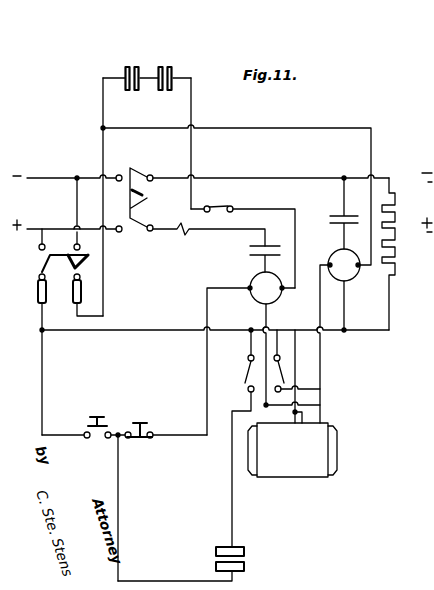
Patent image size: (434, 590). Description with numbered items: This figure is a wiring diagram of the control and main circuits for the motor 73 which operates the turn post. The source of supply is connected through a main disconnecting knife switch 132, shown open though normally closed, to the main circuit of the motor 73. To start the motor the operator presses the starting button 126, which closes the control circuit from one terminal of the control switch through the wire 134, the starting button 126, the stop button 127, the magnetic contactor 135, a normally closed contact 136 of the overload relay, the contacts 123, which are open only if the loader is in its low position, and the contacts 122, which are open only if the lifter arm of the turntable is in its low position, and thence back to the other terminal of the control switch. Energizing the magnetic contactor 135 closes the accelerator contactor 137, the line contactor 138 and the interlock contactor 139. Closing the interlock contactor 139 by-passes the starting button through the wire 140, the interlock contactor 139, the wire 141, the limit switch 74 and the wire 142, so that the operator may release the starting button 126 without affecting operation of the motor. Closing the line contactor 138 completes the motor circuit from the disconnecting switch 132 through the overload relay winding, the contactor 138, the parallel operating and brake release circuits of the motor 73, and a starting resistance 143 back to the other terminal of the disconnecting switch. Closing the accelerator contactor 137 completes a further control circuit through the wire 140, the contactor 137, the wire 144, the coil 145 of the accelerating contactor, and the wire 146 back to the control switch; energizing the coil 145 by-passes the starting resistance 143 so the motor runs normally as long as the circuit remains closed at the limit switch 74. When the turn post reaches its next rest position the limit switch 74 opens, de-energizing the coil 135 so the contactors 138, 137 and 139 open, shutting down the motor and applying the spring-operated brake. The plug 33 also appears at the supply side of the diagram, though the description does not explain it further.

The cooperating contacts 122 is at (138, 66).
The cooperating contacts 123 is at (174, 70).
The wire 146 is at (297, 128).
The main disconnecting knife switch 132 is at (149, 206).
The normally closed contact of the overload relay 136 is at (222, 207).
The starting resistance 143 is at (397, 212).
The plug 33 is at (47, 263).
The line contactor 138 is at (250, 251).
The magnetic contactor 135 is at (257, 297).
The wire 144 is at (318, 290).
The coil of the accelerating contactor 145 is at (353, 280).
The wire 140 is at (144, 331).
The wire 134 is at (42, 378).
The interlock contactor 139 is at (246, 375).
The accelerator contactor 137 is at (284, 377).
The starting button 126 is at (92, 422).
The stop button 127 is at (146, 425).
The wire 142 is at (118, 516).
The wire 141 is at (232, 511).
The motor 73 is at (289, 466).
The limit switch 74 is at (244, 566).